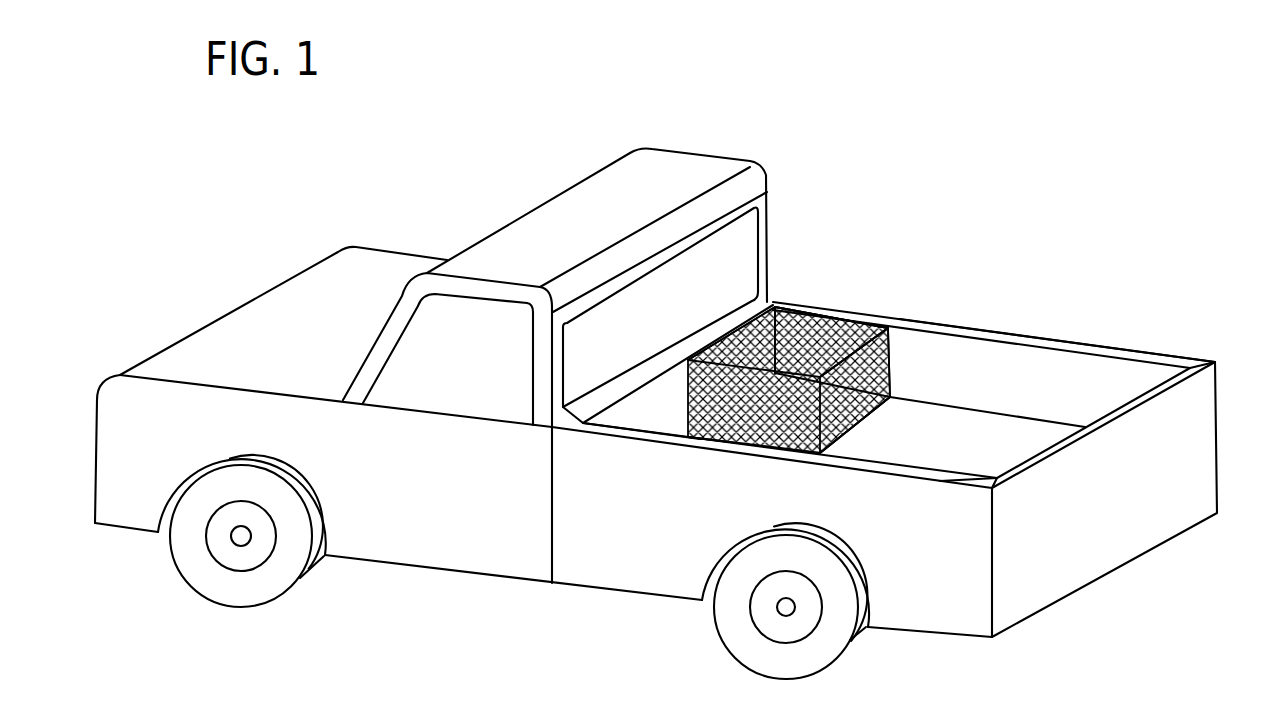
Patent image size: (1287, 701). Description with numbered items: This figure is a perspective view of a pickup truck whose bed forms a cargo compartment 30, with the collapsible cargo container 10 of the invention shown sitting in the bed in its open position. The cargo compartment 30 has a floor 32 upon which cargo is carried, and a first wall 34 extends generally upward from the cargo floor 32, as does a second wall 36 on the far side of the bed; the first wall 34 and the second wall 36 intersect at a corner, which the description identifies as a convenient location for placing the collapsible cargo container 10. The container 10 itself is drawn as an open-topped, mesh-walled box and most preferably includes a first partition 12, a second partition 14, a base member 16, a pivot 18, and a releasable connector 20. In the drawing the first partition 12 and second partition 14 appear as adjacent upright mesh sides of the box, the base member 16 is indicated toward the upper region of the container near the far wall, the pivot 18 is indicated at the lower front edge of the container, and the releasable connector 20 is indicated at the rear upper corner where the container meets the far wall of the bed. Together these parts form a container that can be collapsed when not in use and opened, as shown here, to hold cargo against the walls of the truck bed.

The collapsible cargo container 10 is at (895, 269).
The first partition 12 is at (717, 422).
The second partition 14 is at (893, 363).
The base member 16 is at (826, 317).
The pivot 18 is at (827, 446).
The releasable connector 20 is at (831, 260).
The cargo compartment 30 is at (1086, 340).
The floor 32 is at (999, 464).
The first wall 34 is at (633, 415).
The second wall 36 is at (1130, 388).